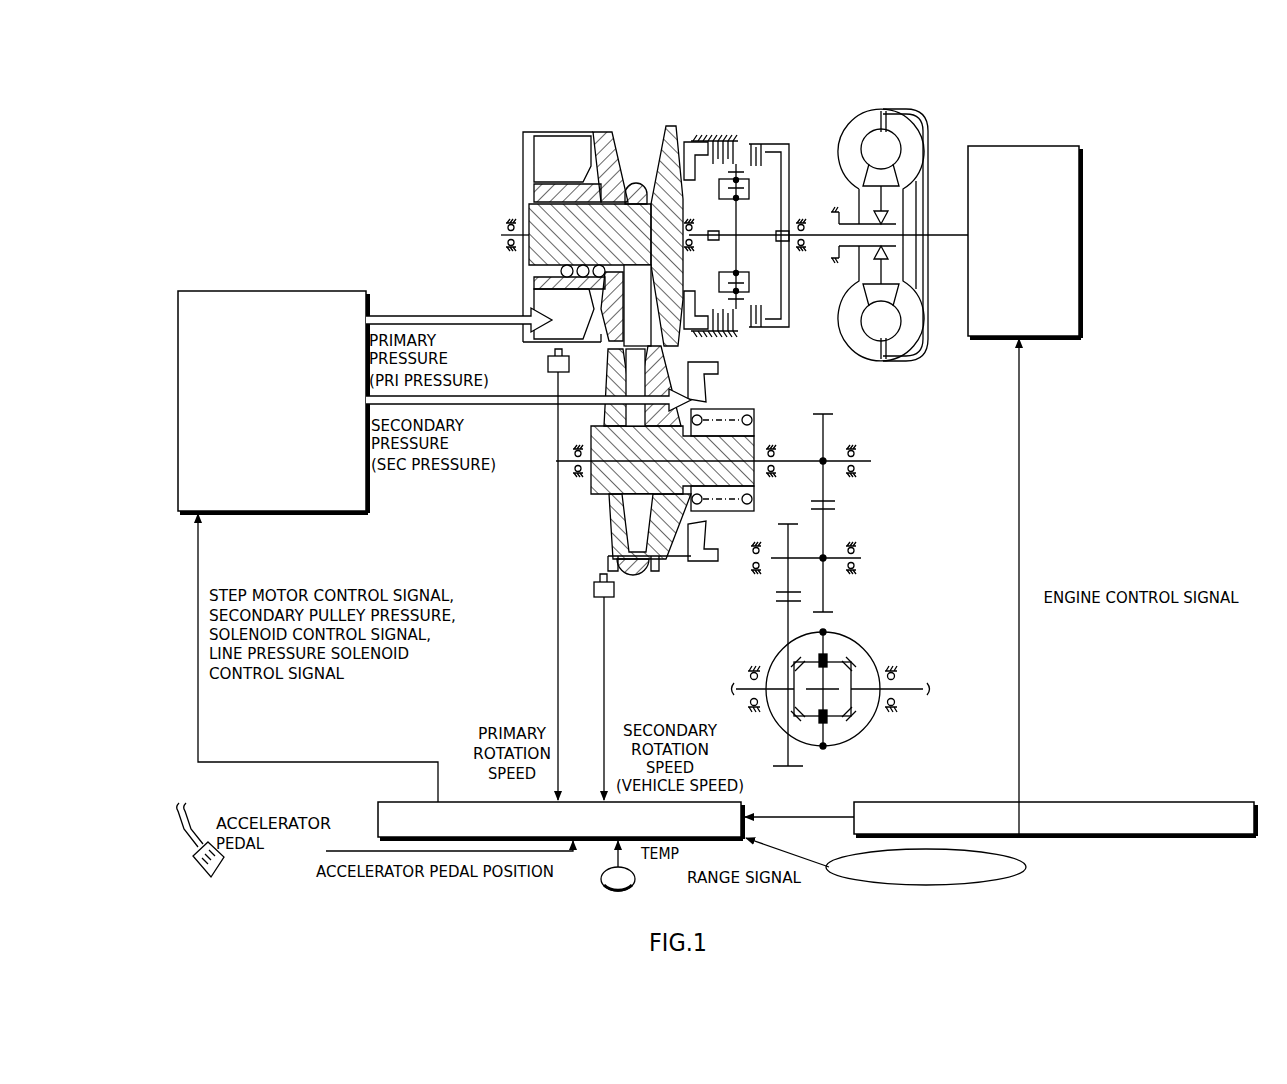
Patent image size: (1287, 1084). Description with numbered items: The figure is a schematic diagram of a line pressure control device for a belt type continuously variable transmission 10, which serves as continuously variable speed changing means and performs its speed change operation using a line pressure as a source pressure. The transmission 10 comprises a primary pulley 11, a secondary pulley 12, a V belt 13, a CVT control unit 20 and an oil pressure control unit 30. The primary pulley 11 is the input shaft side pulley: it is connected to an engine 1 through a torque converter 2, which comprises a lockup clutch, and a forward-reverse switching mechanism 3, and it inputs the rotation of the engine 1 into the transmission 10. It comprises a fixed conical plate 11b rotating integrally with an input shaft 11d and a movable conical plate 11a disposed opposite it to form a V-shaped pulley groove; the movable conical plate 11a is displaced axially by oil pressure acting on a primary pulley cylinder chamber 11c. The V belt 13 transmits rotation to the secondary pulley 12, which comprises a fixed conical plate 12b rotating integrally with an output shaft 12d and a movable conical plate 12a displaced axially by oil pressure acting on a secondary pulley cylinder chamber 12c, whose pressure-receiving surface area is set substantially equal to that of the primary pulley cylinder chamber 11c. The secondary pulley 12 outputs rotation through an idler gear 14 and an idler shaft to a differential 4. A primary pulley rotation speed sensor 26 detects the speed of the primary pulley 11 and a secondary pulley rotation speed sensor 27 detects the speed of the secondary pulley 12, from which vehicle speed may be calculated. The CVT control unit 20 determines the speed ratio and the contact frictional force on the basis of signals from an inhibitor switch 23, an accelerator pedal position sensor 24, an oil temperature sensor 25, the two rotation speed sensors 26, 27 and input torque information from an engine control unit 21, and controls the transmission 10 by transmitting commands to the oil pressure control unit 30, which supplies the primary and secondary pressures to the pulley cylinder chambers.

The engine 1 is at (996, 147).
The torque converter 2 is at (883, 103).
The forward-reverse switching mechanism 3 is at (720, 122).
The differential 4 is at (867, 644).
The belt type continuously variable transmission 10 is at (591, 124).
The primary pulley 11 is at (666, 124).
The movable conical plate 11a is at (608, 134).
The fixed conical plate 11b is at (683, 130).
The primary pulley cylinder chamber 11c is at (559, 145).
The input shaft 11d is at (822, 245).
The secondary pulley 12 is at (730, 386).
The movable conical plate 12a is at (658, 571).
The fixed conical plate 12b is at (615, 521).
The secondary pulley cylinder chamber 12c is at (677, 556).
The output shaft 12d is at (798, 460).
The V belt 13 is at (637, 340).
The idler gear 14 is at (789, 538).
The CVT control unit 20 is at (560, 809).
The engine control unit 21 is at (1055, 806).
The inhibitor switch 23 is at (1025, 868).
The accelerator pedal position sensor 24 is at (200, 835).
The oil temperature sensor 25 is at (635, 880).
The primary pulley rotation speed sensor 26 is at (547, 363).
The secondary pulley rotation speed sensor 27 is at (593, 588).
The oil pressure control unit 30 is at (273, 387).